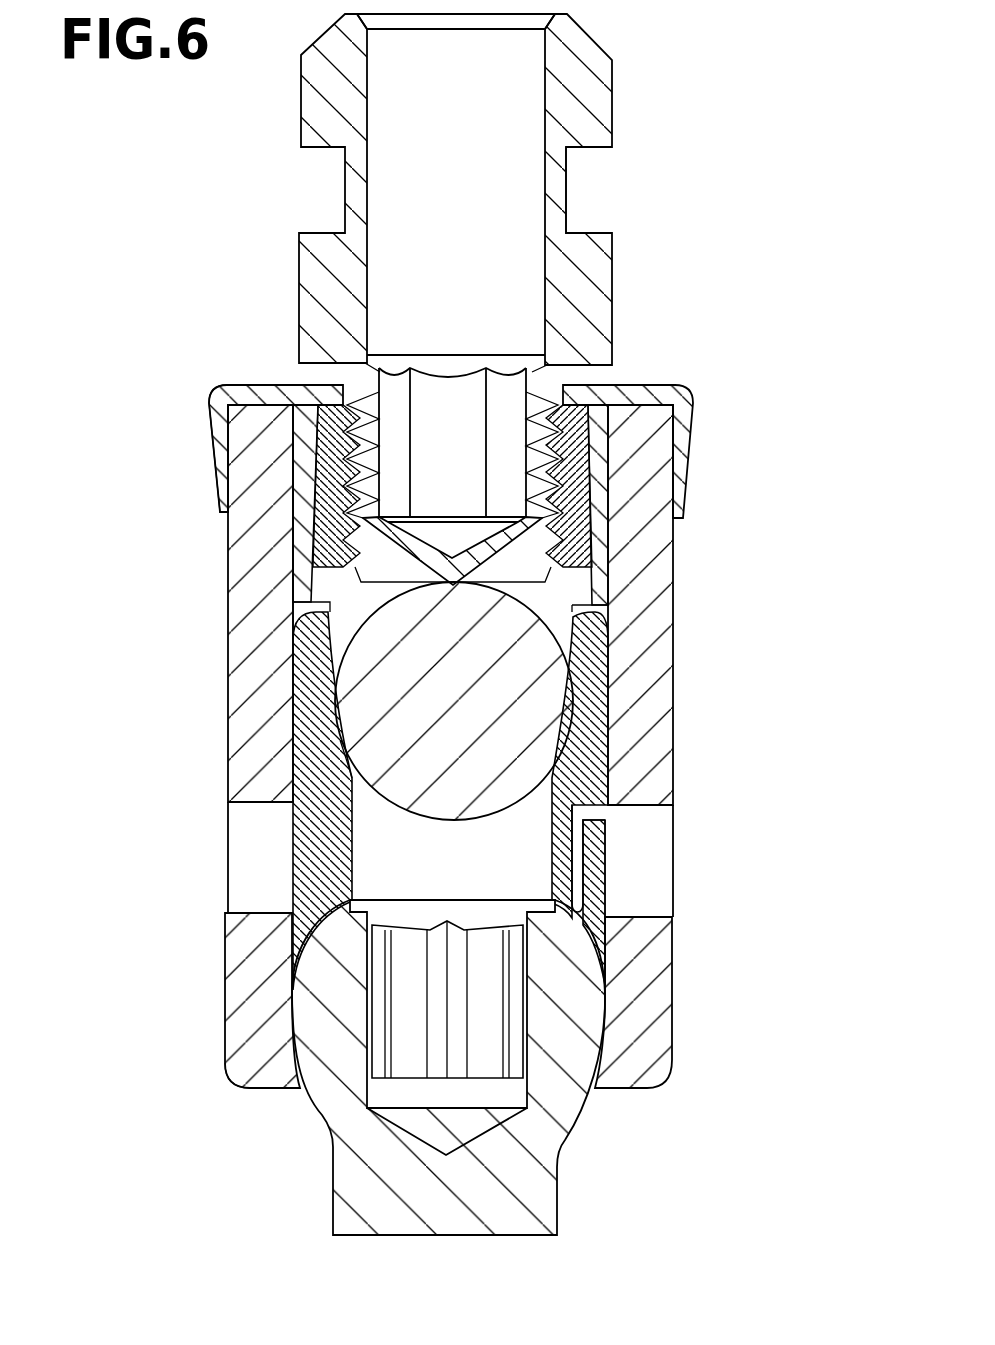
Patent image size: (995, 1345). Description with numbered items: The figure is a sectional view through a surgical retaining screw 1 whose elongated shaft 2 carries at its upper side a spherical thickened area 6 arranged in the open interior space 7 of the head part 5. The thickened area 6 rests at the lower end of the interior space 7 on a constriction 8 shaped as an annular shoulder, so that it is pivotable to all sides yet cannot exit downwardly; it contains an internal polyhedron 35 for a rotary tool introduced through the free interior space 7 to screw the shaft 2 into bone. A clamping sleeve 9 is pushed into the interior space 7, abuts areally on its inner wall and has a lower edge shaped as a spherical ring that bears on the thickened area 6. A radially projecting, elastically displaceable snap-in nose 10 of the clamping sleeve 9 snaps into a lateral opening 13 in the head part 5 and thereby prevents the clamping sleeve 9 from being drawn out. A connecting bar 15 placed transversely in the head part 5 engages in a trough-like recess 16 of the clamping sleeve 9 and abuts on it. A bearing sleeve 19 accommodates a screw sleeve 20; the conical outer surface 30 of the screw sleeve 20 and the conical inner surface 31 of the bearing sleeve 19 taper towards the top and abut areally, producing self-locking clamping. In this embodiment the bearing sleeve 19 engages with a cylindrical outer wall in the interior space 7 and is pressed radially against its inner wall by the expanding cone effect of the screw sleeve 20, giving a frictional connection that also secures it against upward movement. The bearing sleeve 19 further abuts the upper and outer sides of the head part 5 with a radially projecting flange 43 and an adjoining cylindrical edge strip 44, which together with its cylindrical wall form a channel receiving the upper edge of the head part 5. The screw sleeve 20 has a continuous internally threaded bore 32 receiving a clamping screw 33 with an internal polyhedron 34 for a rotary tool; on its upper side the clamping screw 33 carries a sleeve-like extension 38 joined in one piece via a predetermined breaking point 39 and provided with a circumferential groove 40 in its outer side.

The surgical retaining screw 1 is at (648, 311).
The elongated shaft 2 is at (570, 1203).
The head part 5 is at (222, 612).
The spherical thickened area 6 is at (582, 1013).
The interior space 7 is at (300, 686).
The constriction 8 is at (292, 1046).
The clamping sleeve 9 is at (294, 771).
The snap-in nose 10 is at (607, 853).
The lateral opening 13 is at (645, 908).
The connecting bar 15 is at (468, 718).
The trough-like recess 16 is at (350, 766).
The bearing sleeve 19 is at (660, 385).
The screw sleeve 20 is at (312, 538).
The outer surface 30 is at (320, 498).
The inner surface 31 is at (318, 473).
The continuous bore 32 is at (565, 440).
The clamping screw 33 is at (600, 432).
The internal polyhedron 34 is at (461, 476).
The internal polyhedron 35 is at (461, 1024).
The sleeve-like extension 38 is at (614, 42).
The predetermined breaking point 39 is at (538, 368).
The circumferential groove 40 is at (575, 233).
The flange 43 is at (250, 384).
The cylindrical edge strip 44 is at (210, 433).